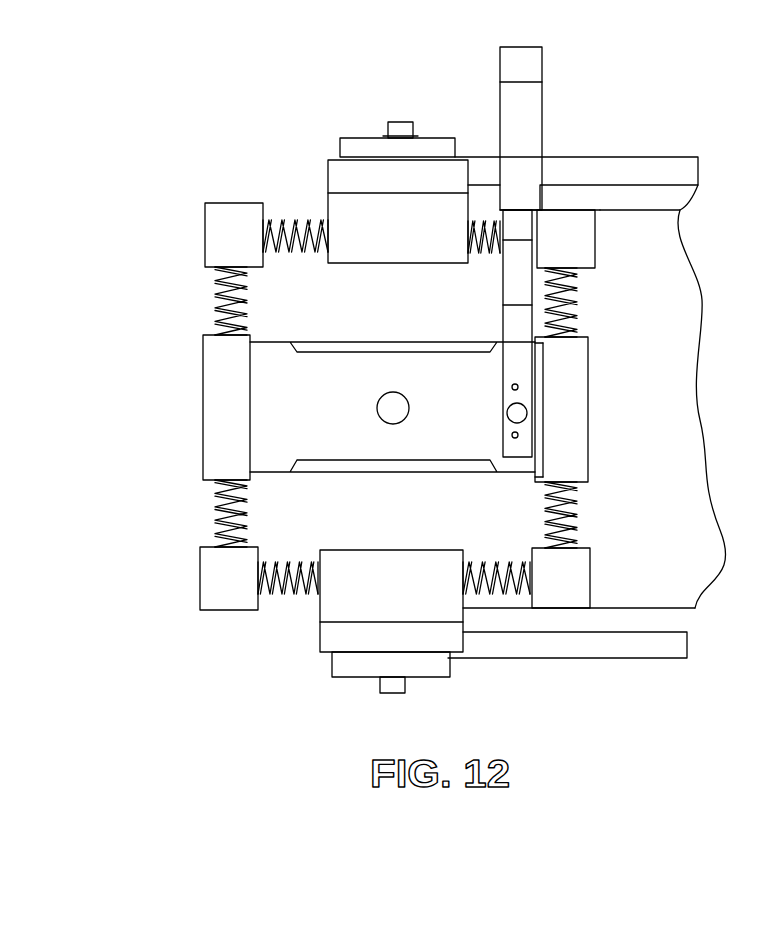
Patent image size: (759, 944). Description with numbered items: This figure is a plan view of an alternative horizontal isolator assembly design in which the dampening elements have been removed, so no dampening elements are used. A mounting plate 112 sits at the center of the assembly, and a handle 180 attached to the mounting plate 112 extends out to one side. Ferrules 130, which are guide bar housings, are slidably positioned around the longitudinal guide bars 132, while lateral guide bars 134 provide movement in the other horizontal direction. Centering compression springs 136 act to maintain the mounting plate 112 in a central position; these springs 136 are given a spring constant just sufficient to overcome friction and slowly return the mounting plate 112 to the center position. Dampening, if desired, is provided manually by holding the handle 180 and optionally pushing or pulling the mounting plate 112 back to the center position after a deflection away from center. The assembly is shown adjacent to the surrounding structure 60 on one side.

The rail 60 is at (652, 172).
The mounting plate 112 is at (360, 440).
The ferrule 130 is at (400, 245).
The longitudinal guide bars 132 is at (298, 215).
The lateral guide bars 134 is at (240, 512).
The centering compression springs 136 is at (285, 596).
The handle 180 is at (528, 108).